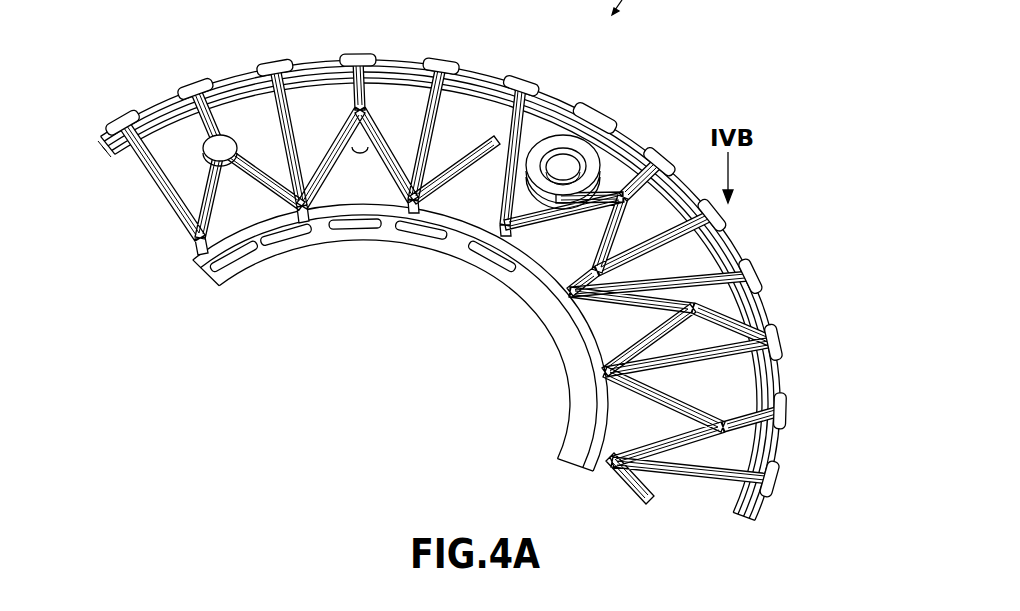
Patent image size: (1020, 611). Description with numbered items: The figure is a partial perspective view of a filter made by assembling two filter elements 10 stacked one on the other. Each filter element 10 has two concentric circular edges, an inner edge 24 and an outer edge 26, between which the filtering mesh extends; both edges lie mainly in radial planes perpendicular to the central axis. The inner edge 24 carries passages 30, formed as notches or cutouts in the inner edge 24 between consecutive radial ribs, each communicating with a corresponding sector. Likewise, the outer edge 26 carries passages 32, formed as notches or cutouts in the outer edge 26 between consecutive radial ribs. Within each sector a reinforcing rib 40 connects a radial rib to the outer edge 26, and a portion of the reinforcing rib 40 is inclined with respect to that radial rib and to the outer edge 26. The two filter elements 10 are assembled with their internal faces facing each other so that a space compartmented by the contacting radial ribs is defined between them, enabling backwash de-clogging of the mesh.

The filter element 10 is at (650, 132).
The inner edge 24 is at (474, 259).
The outer edge 26 is at (120, 119).
The passages 30 is at (352, 233).
The passages 32 is at (168, 108).
The reinforcing rib 40 is at (317, 100).